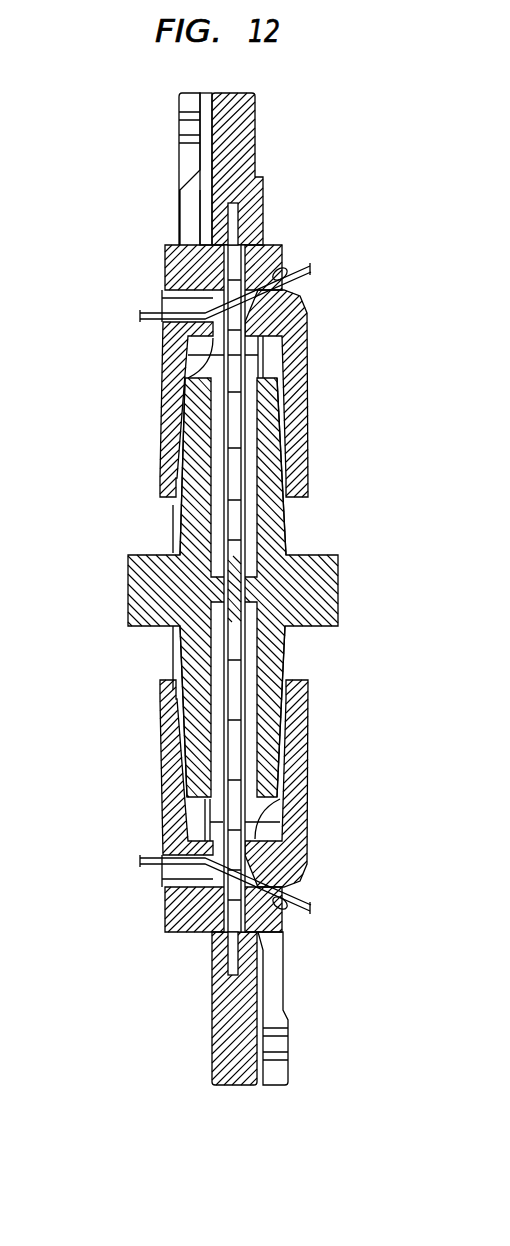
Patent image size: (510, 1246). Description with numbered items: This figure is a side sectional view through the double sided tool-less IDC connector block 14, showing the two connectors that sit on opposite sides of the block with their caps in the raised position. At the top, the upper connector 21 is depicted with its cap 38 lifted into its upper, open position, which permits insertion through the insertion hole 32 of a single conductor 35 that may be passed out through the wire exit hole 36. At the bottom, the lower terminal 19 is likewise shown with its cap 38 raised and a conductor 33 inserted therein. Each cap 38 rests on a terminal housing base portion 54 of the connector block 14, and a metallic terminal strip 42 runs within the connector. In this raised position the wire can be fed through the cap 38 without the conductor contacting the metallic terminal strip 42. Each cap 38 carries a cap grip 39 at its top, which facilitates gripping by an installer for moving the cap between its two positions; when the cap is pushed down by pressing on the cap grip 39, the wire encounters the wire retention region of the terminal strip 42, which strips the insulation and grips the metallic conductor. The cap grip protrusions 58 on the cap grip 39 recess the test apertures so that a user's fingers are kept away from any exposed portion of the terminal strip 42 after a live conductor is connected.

The connector block 14 is at (338, 588).
The IDC connector 19 is at (103, 751).
The upper connector 21 is at (134, 383).
The insertion hole 32 is at (274, 272).
The conductor 33 is at (300, 891).
The conductor 35 is at (326, 270).
The wire exit hole 36 is at (172, 307).
The cap 38 is at (308, 377).
The cap grip 39 is at (186, 133).
The metallic terminal strip 42 is at (244, 528).
The terminal housing base portion 54 is at (180, 528).
The cap grip protrusions 58 is at (186, 217).